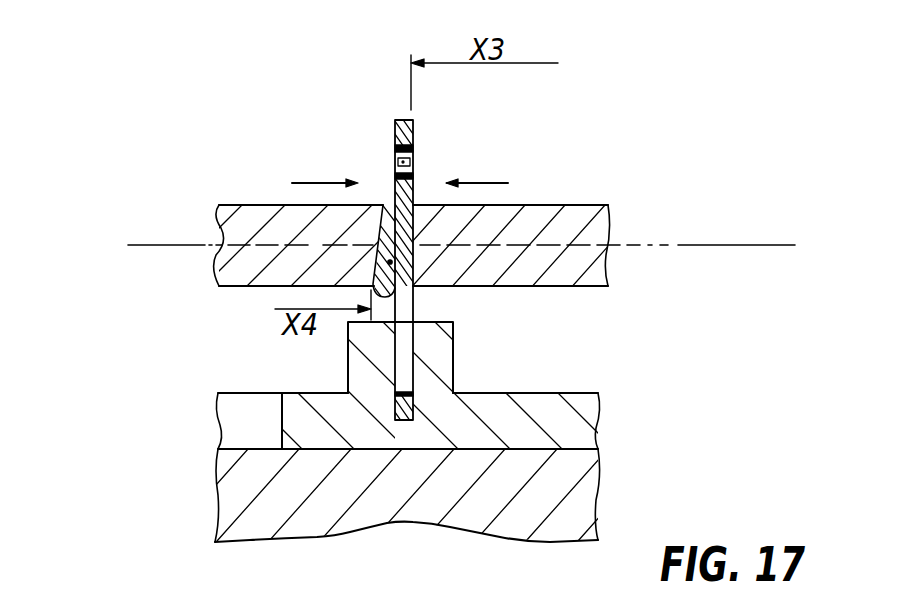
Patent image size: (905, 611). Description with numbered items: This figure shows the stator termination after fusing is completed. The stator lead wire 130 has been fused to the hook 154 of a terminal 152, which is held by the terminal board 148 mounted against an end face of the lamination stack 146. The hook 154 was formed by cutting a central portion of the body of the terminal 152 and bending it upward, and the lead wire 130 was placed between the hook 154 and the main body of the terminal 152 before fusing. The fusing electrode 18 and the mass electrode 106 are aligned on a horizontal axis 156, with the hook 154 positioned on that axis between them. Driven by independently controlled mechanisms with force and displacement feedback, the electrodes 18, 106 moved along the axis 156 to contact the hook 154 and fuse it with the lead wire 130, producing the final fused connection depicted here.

The fusing electrode 18 is at (250, 204).
The mass electrode 106 is at (585, 217).
The stator lead wire 130 is at (392, 262).
The lamination stack 146 is at (570, 490).
The terminal board 148 is at (580, 422).
The terminal 152 is at (402, 371).
The hook 154 is at (413, 185).
The horizontal axis 156 is at (157, 232).